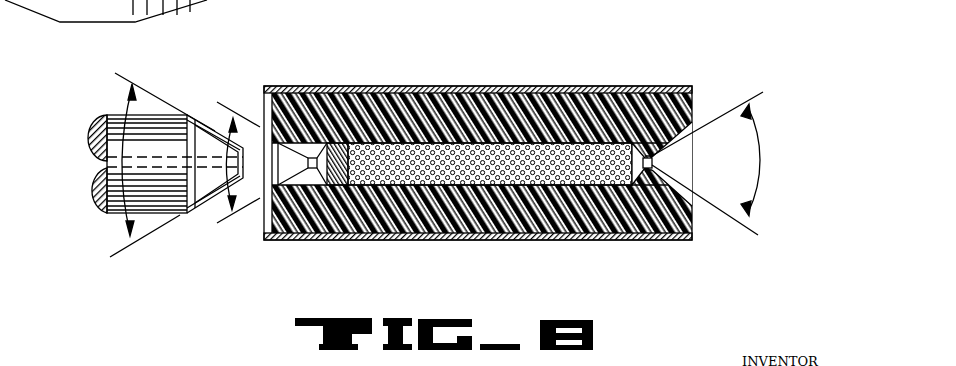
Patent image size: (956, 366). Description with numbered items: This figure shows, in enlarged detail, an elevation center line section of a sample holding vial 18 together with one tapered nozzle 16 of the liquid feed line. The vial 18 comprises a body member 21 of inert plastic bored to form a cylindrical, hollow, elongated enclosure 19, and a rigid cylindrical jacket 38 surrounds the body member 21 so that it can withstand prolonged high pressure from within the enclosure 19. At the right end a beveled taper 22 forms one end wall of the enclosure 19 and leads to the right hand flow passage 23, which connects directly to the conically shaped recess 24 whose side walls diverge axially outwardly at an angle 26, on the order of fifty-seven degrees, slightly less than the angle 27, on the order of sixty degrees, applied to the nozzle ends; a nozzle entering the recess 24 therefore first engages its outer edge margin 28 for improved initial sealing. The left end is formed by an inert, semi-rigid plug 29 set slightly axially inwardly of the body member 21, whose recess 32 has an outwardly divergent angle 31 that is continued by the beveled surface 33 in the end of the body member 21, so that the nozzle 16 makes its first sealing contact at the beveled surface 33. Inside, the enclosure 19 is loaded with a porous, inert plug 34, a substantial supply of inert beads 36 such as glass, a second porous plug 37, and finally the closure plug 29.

The tapered nozzle 16 is at (197, 188).
The vial 18 is at (523, 147).
The enclosure 19 is at (510, 236).
The body member 21 is at (535, 110).
The beveled taper 22 is at (646, 156).
The right hand flow passage 23 is at (652, 160).
The conically shaped recess 24 is at (665, 150).
The angle 26 is at (762, 160).
The angle 27 is at (118, 180).
The outer edge margin 28 is at (683, 179).
The inert plug 29 is at (286, 200).
The outwardly divergent angle 31 is at (216, 136).
The recess 32 is at (320, 150).
The beveled surface 33 is at (285, 150).
The porous plug 34 is at (633, 112).
The inert beads 36 is at (490, 102).
The second plug 37 is at (343, 230).
The rigid cylindrical jacket 38 is at (586, 241).